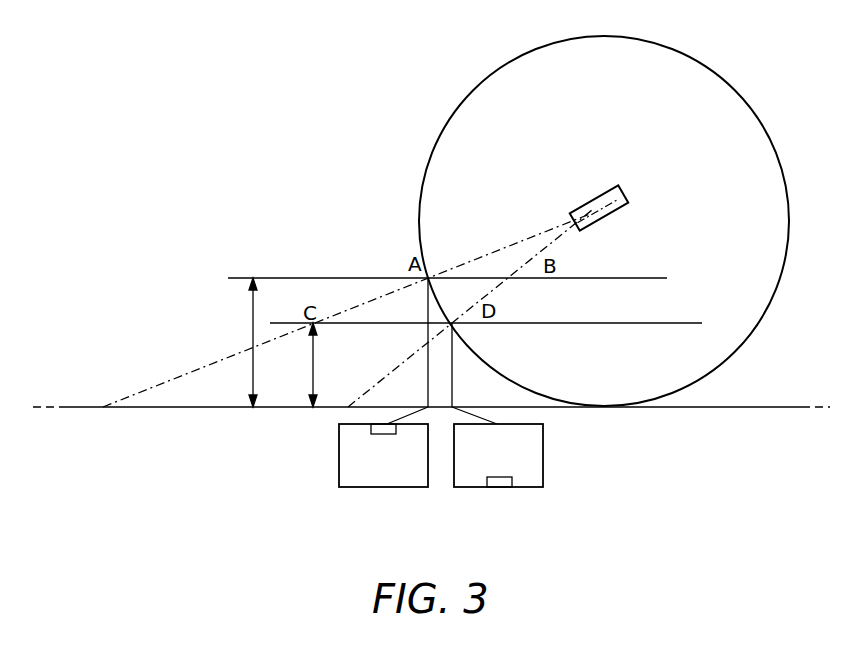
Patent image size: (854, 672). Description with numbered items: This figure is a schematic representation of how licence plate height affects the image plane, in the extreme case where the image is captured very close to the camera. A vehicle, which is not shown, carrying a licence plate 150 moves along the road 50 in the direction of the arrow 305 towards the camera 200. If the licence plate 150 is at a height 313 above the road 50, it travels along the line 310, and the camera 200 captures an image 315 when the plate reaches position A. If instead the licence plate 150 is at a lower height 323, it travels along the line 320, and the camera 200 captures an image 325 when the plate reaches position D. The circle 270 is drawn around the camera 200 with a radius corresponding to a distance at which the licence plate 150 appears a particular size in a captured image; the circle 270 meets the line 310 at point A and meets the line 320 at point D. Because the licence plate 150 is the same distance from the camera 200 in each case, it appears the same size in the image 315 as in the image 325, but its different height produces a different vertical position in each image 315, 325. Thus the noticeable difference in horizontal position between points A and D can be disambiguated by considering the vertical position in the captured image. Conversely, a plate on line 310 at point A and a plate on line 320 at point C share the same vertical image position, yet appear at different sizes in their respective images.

The road 50 is at (762, 406).
The circle 270 is at (499, 71).
The camera 200 is at (589, 200).
The line 310 is at (620, 278).
The line 320 is at (660, 323).
The arrow 305 is at (173, 303).
The height 313 is at (235, 342).
The height 323 is at (295, 365).
The image 315 is at (339, 457).
The image 325 is at (543, 455).
The licence plate 150 is at (387, 434).